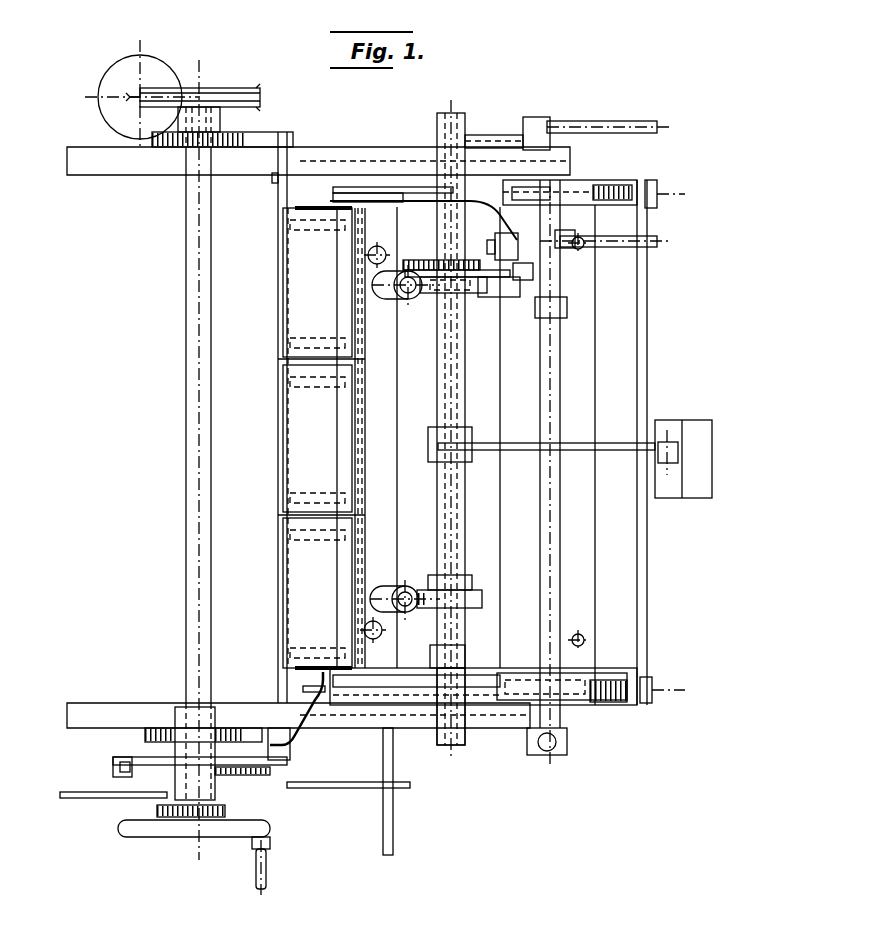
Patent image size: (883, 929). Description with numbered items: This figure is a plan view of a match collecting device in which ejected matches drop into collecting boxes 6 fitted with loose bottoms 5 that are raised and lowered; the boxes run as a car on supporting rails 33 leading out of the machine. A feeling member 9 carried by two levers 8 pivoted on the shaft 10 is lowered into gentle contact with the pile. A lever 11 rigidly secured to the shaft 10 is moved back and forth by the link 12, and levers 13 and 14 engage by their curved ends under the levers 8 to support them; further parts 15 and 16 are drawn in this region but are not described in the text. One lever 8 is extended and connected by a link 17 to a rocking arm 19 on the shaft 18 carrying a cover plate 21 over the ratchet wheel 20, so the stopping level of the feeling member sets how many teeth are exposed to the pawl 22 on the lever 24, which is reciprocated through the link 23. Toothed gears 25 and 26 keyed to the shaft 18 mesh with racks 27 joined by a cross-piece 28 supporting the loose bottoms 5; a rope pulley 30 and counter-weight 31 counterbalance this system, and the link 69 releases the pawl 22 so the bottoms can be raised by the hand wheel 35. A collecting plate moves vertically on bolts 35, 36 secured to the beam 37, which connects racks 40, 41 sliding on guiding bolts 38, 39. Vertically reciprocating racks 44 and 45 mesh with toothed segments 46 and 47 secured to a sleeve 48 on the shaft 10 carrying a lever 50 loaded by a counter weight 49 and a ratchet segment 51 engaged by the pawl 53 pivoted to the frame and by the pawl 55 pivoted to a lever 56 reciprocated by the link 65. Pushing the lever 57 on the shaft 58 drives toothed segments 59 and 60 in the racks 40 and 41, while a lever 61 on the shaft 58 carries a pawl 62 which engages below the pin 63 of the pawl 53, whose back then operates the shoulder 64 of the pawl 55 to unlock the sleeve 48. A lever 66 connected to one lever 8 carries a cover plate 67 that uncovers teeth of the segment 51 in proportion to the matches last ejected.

The loose bottom 5 is at (298, 259).
The collecting box 6 is at (292, 660).
The lever 8 is at (330, 207).
The feeling member 9 is at (298, 473).
The shaft 10 is at (453, 728).
The lever 11 is at (478, 138).
The link 12 is at (600, 121).
The lever 13 is at (378, 688).
The lever 14 is at (388, 187).
The bracket 15 is at (338, 690).
The upper guide bar 16 is at (340, 193).
The link 17 is at (285, 762).
The shaft 18 is at (212, 533).
The rocking arm 19 is at (140, 757).
The ratchet wheel 20 is at (265, 775).
The cover plate 21 is at (113, 768).
The pawl 22 is at (140, 798).
The link 23 is at (70, 798).
The lever 24 is at (210, 785).
The toothed gear 25 is at (157, 728).
The toothed gear 26 is at (172, 147).
The rack 27 is at (258, 138).
The cross-piece 28 is at (278, 192).
The rope pulley 30 is at (228, 88).
The counter-weight 31 is at (160, 66).
The supporting rail 33 is at (393, 800).
The bolt 35 is at (168, 838).
The bolt 36 is at (582, 248).
The beam 37 is at (585, 370).
The guiding bolt 38 is at (632, 703).
The guiding bolt 39 is at (648, 182).
The rack 40 is at (610, 680).
The rack 41 is at (612, 200).
The rack 44 is at (407, 586).
The rack 45 is at (412, 298).
The toothed segment 46 is at (478, 592).
The toothed segment 47 is at (483, 300).
The sleeve 48 is at (466, 484).
The counter weight 49 is at (710, 478).
The lever 50 is at (575, 450).
The ratchet segment 51 is at (440, 270).
The pawl 53 is at (500, 297).
The pawl 55 is at (552, 255).
The lever 56 is at (448, 258).
The lever 57 is at (552, 752).
The shaft 58 is at (545, 563).
The toothed segment 59 is at (578, 702).
The toothed segment 60 is at (580, 188).
The lever 61 is at (545, 300).
The pawl 62 is at (455, 293).
The pin 63 is at (555, 297).
The shoulder 64 is at (533, 270).
The link 65 is at (640, 238).
The lever 66 is at (488, 205).
The cover plate 67 is at (510, 240).
The link 69 is at (345, 788).